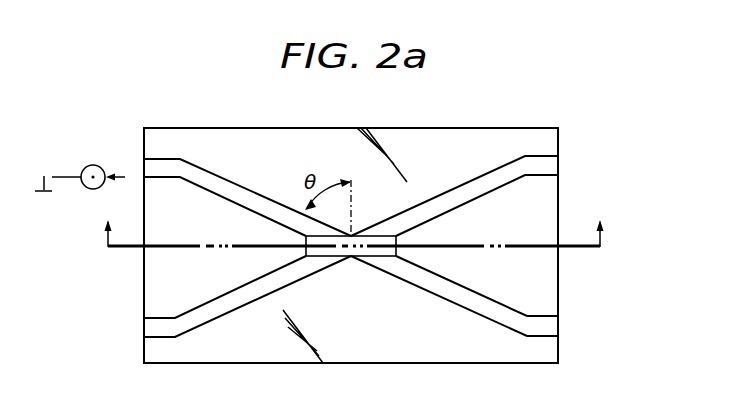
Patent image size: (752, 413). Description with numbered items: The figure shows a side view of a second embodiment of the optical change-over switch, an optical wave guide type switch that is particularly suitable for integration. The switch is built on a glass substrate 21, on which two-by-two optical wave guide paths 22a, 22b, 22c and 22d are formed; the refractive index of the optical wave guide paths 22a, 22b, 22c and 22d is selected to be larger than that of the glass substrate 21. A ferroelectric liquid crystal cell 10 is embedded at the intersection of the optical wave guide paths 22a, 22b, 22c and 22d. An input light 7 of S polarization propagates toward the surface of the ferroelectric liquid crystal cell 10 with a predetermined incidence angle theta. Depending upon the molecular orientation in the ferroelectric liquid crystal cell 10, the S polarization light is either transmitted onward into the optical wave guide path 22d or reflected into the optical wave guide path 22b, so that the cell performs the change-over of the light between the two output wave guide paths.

The glass substrate 21 is at (213, 134).
The optical wave guide path 22a is at (147, 167).
The optical wave guide path 22b is at (552, 167).
The optical wave guide path 22c is at (148, 328).
The optical wave guide path 22d is at (552, 326).
The ferroelectric liquid crystal cell 10 is at (334, 253).
The input light 7 is at (87, 186).